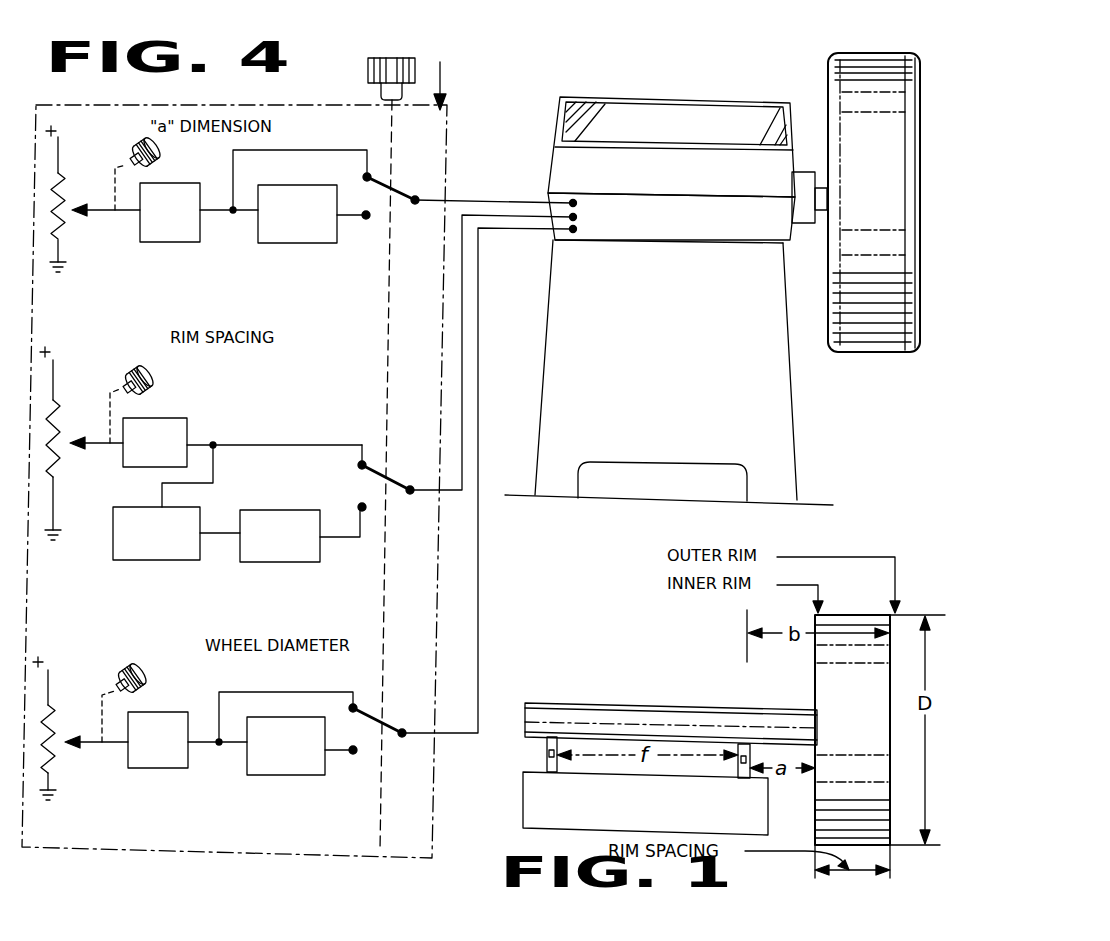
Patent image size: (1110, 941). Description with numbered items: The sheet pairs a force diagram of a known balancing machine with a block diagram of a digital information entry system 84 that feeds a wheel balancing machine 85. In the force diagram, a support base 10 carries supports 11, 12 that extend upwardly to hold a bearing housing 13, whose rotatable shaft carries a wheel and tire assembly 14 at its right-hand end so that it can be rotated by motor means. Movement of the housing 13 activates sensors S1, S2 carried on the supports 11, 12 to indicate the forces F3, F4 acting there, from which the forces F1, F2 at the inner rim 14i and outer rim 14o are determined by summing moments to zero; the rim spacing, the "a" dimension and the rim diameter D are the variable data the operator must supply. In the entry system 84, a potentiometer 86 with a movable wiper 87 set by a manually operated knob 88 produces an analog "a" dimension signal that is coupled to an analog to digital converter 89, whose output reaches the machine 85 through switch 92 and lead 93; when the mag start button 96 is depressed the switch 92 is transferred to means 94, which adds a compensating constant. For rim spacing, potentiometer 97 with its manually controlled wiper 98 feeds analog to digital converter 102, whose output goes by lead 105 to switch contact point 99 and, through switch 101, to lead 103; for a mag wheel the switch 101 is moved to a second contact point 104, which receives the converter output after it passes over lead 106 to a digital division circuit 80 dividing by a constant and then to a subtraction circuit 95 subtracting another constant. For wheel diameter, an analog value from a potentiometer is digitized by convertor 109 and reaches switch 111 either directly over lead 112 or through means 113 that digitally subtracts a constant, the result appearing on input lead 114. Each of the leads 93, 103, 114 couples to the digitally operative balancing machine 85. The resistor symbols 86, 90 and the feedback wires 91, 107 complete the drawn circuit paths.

In FIG. 1, the support base 10 is at (626, 817).
In FIG. 1, the support 11 is at (758, 745).
In FIG. 1, the support 12 is at (560, 740).
In FIG. 1, the bearing housing 13 is at (683, 722).
In FIG. 1, the wheel and tire assembly 14 is at (866, 745).
In FIG. 1, the inner rim 14i is at (816, 680).
In FIG. 1, the outer rim 14o is at (893, 696).
In FIG. 1, the sensor S1 is at (738, 762).
In FIG. 1, the sensor S2 is at (547, 754).
In FIG. 1, the force F1 is at (813, 872).
In FIG. 1, the force F2 is at (889, 872).
In FIG. 1, the force F3 is at (744, 695).
In FIG. 1, the force F4 is at (555, 692).
In FIG. 4, the digital division circuit 80 is at (128, 561).
In FIG. 4, the information entry system 84 is at (512, 151).
In FIG. 4, the balancing machine 85 is at (678, 336).
In FIG. 4, the potentiometer 86 is at (78, 225).
In FIG. 4, the movable wiper 87 is at (97, 214).
In FIG. 4, the manually operated knob 88 is at (135, 142).
In FIG. 4, the analog to digital converter 89 is at (163, 185).
In FIG. 4, the potentiometer 90 is at (68, 457).
In FIG. 4, the bypass line 91 is at (322, 150).
In FIG. 4, the switch 92 is at (395, 188).
In FIG. 4, the lead 93 is at (420, 204).
In FIG. 4, the means for adding a compensating constant 94 is at (345, 238).
In FIG. 4, the subtraction circuit 95 is at (286, 563).
In FIG. 4, the mag start button 96 is at (392, 58).
In FIG. 4, the potentiometer 97 is at (78, 392).
In FIG. 4, the manually controlled wiper 98 is at (97, 440).
In FIG. 4, the switch contact point 99 is at (362, 465).
In FIG. 4, the switch 101 is at (410, 493).
In FIG. 4, the analog to digital converter 102 is at (183, 418).
In FIG. 4, the lead 103 is at (462, 425).
In FIG. 4, the second contact point 104 is at (362, 507).
In FIG. 4, the lead 105 is at (266, 445).
In FIG. 4, the lead 106 is at (215, 465).
In FIG. 4, the connecting line 107 is at (217, 535).
In FIG. 4, the analog to digital convertor 109 is at (161, 769).
In FIG. 4, the switch 111 is at (382, 735).
In FIG. 4, the lead 112 is at (275, 692).
In FIG. 4, the means for digitally subtracting a constant value 113 is at (291, 776).
In FIG. 4, the input lead 114 is at (418, 730).